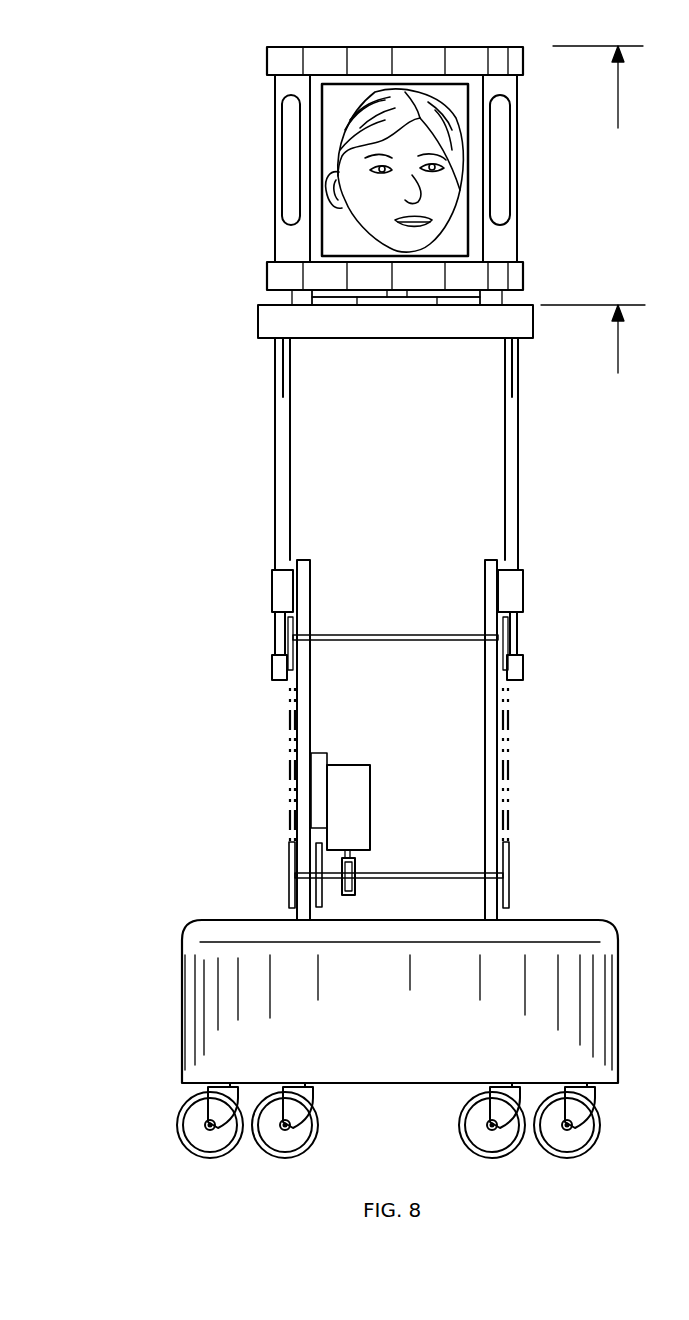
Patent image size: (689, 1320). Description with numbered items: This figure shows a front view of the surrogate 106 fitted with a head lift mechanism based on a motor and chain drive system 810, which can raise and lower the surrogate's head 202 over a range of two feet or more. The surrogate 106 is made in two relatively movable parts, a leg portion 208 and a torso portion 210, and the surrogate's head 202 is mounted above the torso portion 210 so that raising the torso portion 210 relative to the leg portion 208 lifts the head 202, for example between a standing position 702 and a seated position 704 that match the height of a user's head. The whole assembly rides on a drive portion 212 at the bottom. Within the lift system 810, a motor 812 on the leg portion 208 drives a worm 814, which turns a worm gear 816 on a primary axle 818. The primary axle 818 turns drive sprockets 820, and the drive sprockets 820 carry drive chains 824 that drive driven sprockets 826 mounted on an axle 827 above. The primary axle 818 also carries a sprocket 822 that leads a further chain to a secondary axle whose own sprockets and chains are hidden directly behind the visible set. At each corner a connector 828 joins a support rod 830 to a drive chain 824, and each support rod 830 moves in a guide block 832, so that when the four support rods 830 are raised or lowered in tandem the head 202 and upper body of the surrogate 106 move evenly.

The surrogate 106 is at (150, 346).
The surrogate's head 202 is at (267, 62).
The standing position 702 is at (598, 104).
The seated position 704 is at (593, 355).
The torso portion 210 is at (523, 340).
The support rod 830 is at (275, 483).
The guide block 832 is at (272, 578).
The motor and chain drive system 810 is at (232, 602).
The leg portion 208 is at (510, 812).
The driven sprockets 826 is at (277, 640).
The connector 828 is at (272, 670).
The axle 827 is at (368, 635).
The drive chains 824 is at (283, 780).
The motor 812 is at (366, 807).
The worm gear 816 is at (352, 858).
The worm 814 is at (358, 890).
The primary axle 818 is at (408, 873).
The sprocket 822 is at (300, 860).
The drive sprockets 820 is at (292, 890).
The drive portion 212 is at (183, 1035).